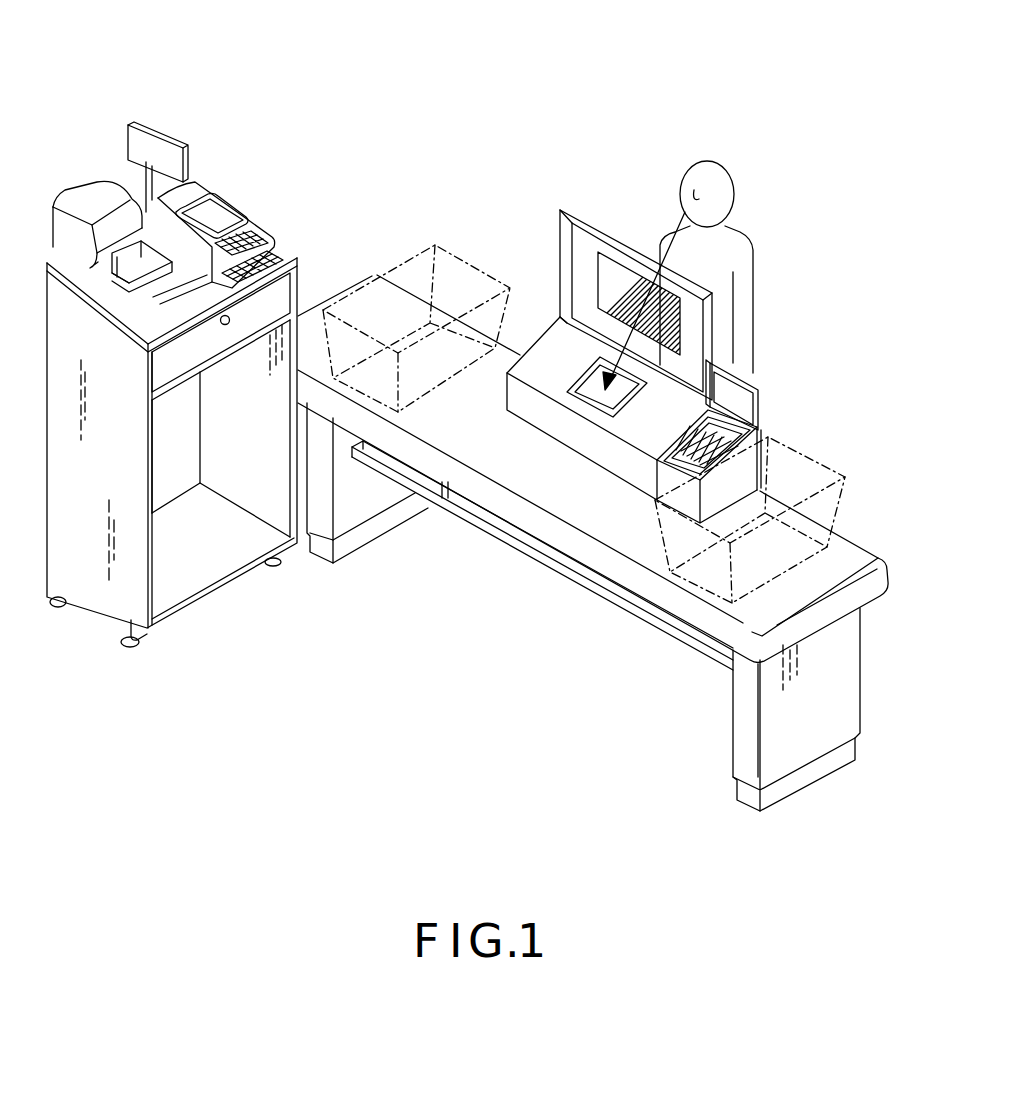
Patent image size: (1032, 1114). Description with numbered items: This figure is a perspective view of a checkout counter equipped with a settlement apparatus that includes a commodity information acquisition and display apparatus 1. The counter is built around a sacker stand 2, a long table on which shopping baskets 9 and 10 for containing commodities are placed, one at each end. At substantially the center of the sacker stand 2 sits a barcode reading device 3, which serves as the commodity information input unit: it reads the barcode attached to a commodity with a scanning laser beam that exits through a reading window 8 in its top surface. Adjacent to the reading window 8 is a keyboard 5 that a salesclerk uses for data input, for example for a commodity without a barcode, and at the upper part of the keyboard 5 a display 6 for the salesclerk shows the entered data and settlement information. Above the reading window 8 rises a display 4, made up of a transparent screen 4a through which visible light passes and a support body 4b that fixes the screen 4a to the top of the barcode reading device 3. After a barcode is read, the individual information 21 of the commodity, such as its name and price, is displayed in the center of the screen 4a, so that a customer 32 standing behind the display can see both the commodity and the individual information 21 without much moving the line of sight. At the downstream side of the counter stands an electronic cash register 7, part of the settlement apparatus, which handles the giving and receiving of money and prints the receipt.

The commodity information acquisition and display apparatus 1 is at (693, 93).
The sacker stand 2 is at (847, 560).
The barcode reading device 3 is at (548, 330).
The display 4 is at (617, 247).
The screen 4a is at (580, 258).
The support body 4b is at (584, 232).
The keyboard 5 is at (688, 443).
The display for salesclerk 6 is at (745, 405).
The electronic cash register 7 is at (291, 106).
The reading window 8 is at (585, 403).
The shopping basket 9 is at (832, 450).
The shopping basket 10 is at (400, 265).
The individual information 21 is at (687, 325).
The customer 32 is at (721, 164).